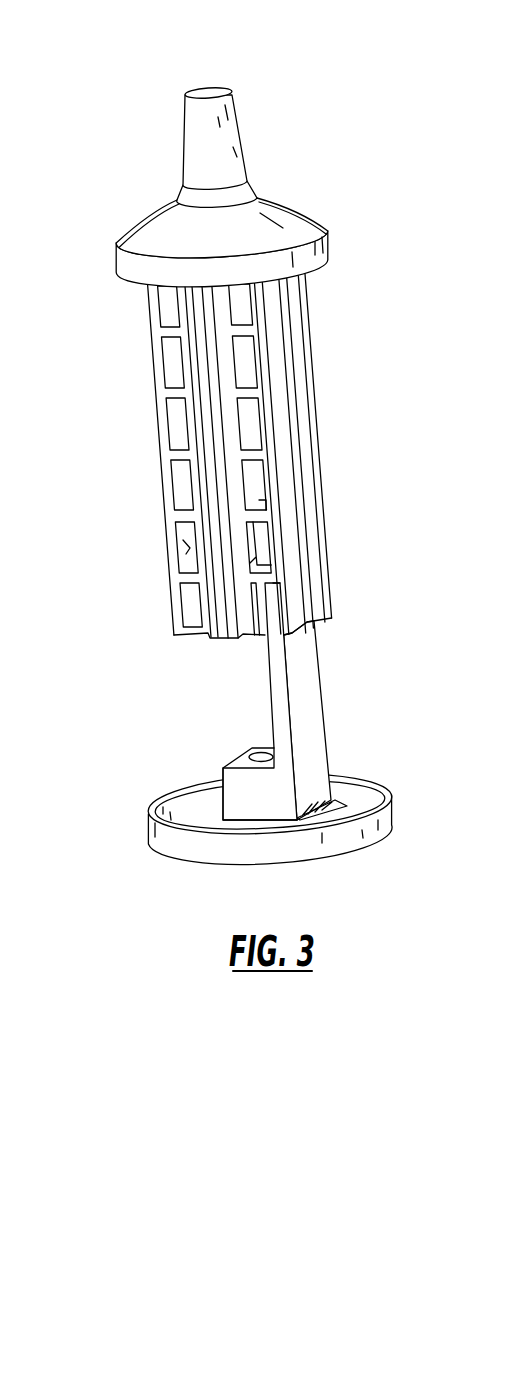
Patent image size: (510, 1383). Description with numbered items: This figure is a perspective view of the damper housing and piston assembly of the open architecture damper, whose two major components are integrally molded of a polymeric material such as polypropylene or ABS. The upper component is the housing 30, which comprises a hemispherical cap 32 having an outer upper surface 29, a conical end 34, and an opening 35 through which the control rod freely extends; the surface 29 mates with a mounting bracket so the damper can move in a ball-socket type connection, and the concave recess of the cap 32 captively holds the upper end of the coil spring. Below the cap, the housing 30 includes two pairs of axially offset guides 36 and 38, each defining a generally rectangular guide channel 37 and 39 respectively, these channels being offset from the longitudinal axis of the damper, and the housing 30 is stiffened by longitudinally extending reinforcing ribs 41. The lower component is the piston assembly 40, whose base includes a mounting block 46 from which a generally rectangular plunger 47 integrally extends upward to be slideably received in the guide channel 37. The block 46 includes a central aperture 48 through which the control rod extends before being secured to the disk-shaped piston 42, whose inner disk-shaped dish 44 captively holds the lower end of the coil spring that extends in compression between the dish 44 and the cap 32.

The outer upper surface 29 is at (287, 213).
The housing 30 is at (251, 478).
The hemispherical cap 32 is at (262, 215).
The conical end 34 is at (245, 104).
The opening 35 is at (209, 88).
The guide 36 is at (236, 478).
The guide channel 37 is at (270, 562).
The guide 38 is at (138, 456).
The guide channel 39 is at (190, 550).
The piston assembly 40 is at (301, 808).
The reinforcing ribs 41 is at (316, 426).
The piston 42 is at (392, 818).
The dish 44 is at (203, 815).
The mounting block 46 is at (177, 742).
The plunger 47 is at (232, 701).
The aperture 48 is at (267, 758).